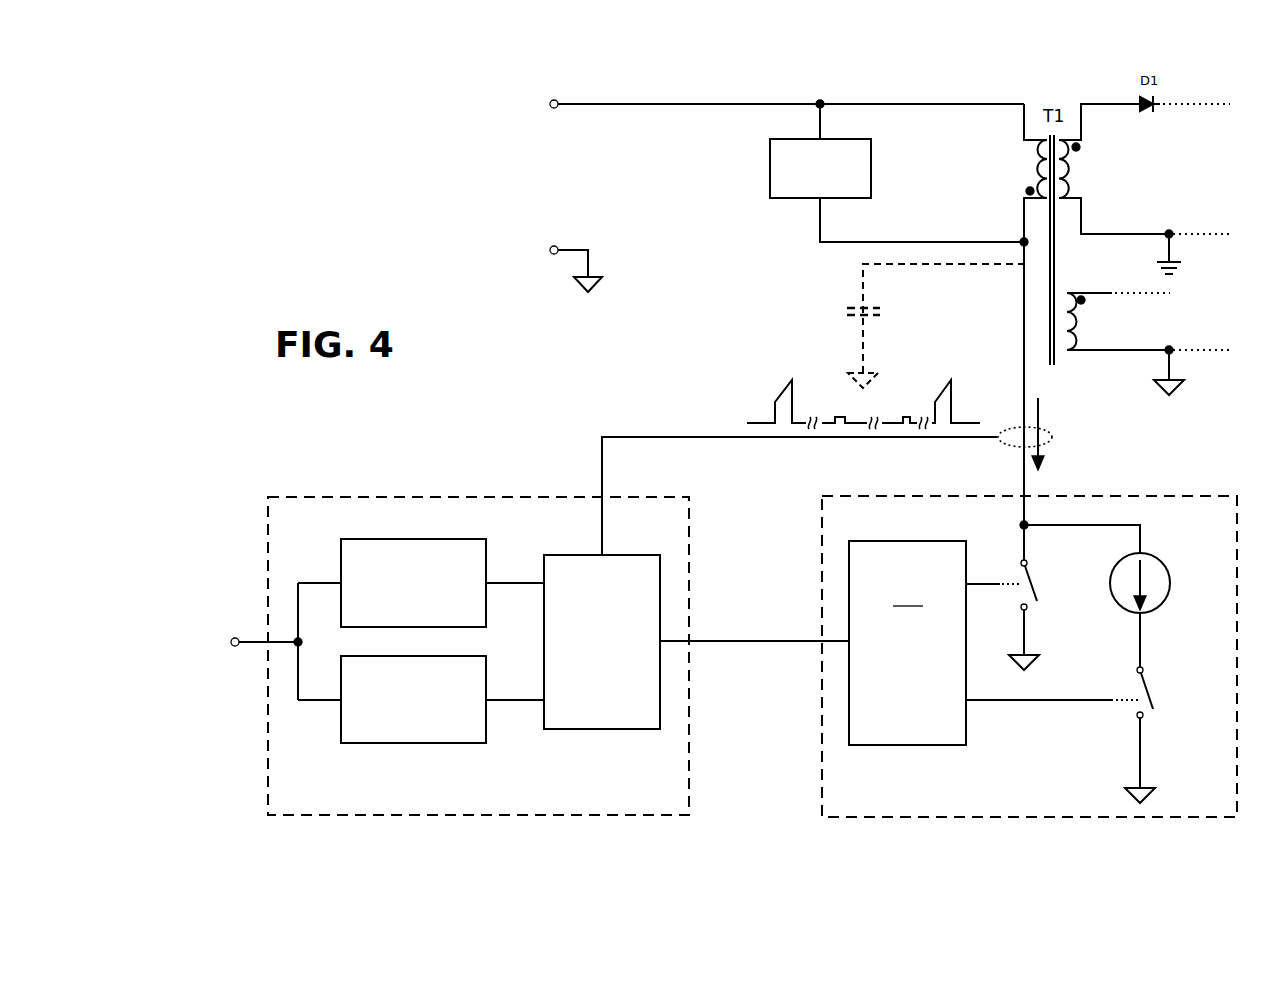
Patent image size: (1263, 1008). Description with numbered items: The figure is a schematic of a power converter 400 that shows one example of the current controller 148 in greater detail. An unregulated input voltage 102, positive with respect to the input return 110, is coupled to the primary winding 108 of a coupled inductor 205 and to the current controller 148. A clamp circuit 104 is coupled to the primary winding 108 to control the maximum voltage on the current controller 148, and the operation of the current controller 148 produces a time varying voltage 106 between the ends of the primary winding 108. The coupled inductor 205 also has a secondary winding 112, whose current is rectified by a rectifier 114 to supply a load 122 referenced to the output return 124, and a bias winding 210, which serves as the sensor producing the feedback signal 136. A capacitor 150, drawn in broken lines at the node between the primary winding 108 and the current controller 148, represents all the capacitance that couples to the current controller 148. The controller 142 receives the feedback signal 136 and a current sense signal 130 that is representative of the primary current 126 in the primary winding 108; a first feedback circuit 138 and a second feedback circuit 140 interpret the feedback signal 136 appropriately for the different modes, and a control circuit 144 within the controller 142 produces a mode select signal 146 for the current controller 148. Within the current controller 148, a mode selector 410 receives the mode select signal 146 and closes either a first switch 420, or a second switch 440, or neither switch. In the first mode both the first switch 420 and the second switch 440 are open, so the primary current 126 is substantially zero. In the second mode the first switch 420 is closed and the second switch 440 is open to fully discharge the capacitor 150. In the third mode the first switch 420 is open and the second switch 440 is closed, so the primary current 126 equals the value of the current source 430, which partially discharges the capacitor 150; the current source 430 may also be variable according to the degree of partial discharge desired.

The power converter 400 is at (320, 228).
The input voltage VIN 102 is at (582, 185).
The clamp circuit 104 is at (762, 179).
The voltage VP 106 is at (948, 155).
The primary winding 108 is at (1027, 190).
The input return 110 is at (600, 270).
The secondary winding 112 is at (1084, 172).
The rectifier D1 114 is at (1147, 118).
The load 122 is at (905, 304).
The output return 124 is at (1185, 268).
The current IP 126 is at (1047, 402).
The current sense signal 130 is at (688, 431).
The feedback signal UFB 136 is at (213, 645).
The first feedback circuit 138 is at (338, 548).
The second feedback circuit 140 is at (362, 745).
The controller 142 is at (693, 795).
The control circuit 144 is at (628, 732).
The mode select signal 146 is at (755, 646).
The current controller 148 is at (820, 786).
The capacitor CP 150 is at (847, 302).
The coupled inductor 205 is at (1058, 267).
The bias winding 210 is at (1080, 326).
The mode selector 410 is at (907, 643).
The switch S1 420 is at (1038, 572).
The current source 430 is at (1160, 554).
The switch S2 440 is at (1155, 683).